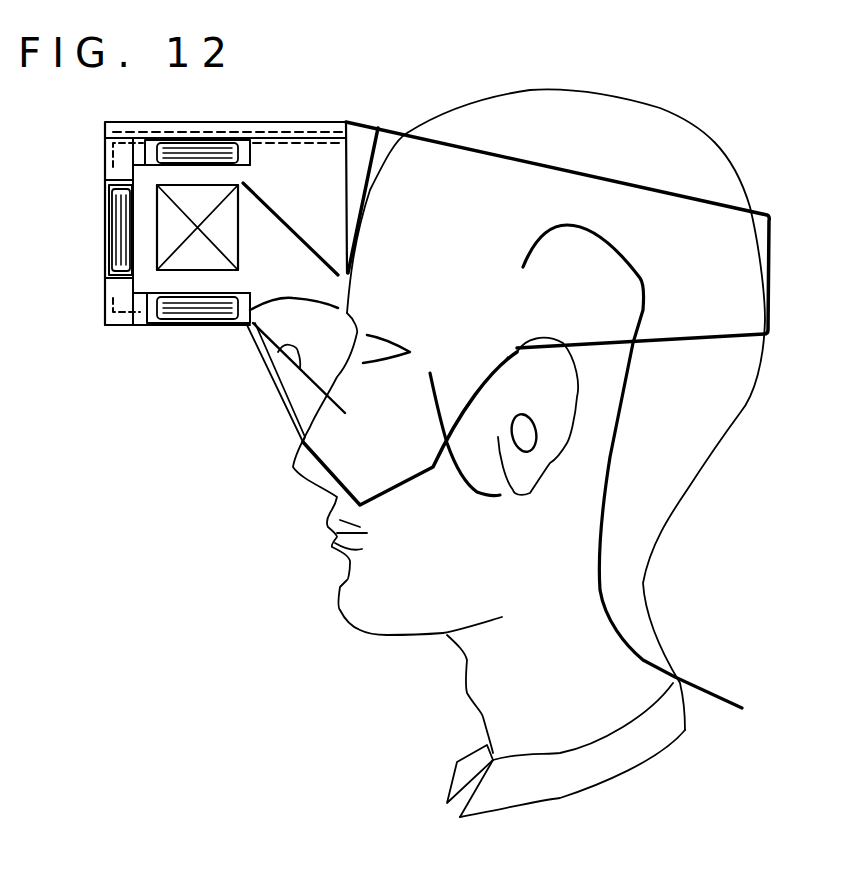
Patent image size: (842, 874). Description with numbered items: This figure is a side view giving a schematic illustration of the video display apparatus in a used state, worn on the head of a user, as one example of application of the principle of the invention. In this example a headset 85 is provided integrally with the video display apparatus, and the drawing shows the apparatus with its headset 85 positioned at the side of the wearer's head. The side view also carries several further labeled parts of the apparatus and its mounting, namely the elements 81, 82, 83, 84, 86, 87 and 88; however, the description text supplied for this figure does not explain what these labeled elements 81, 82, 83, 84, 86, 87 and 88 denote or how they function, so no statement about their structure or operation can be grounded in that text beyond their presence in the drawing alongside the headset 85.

The half mirror 81 is at (297, 224).
The connecting cord 82 is at (267, 365).
The fastening band 83 is at (283, 410).
The head band 84 is at (590, 180).
The headset 85 is at (478, 493).
The strap 86 is at (643, 308).
The drive coil 87 is at (297, 140).
The housing 88 is at (140, 122).